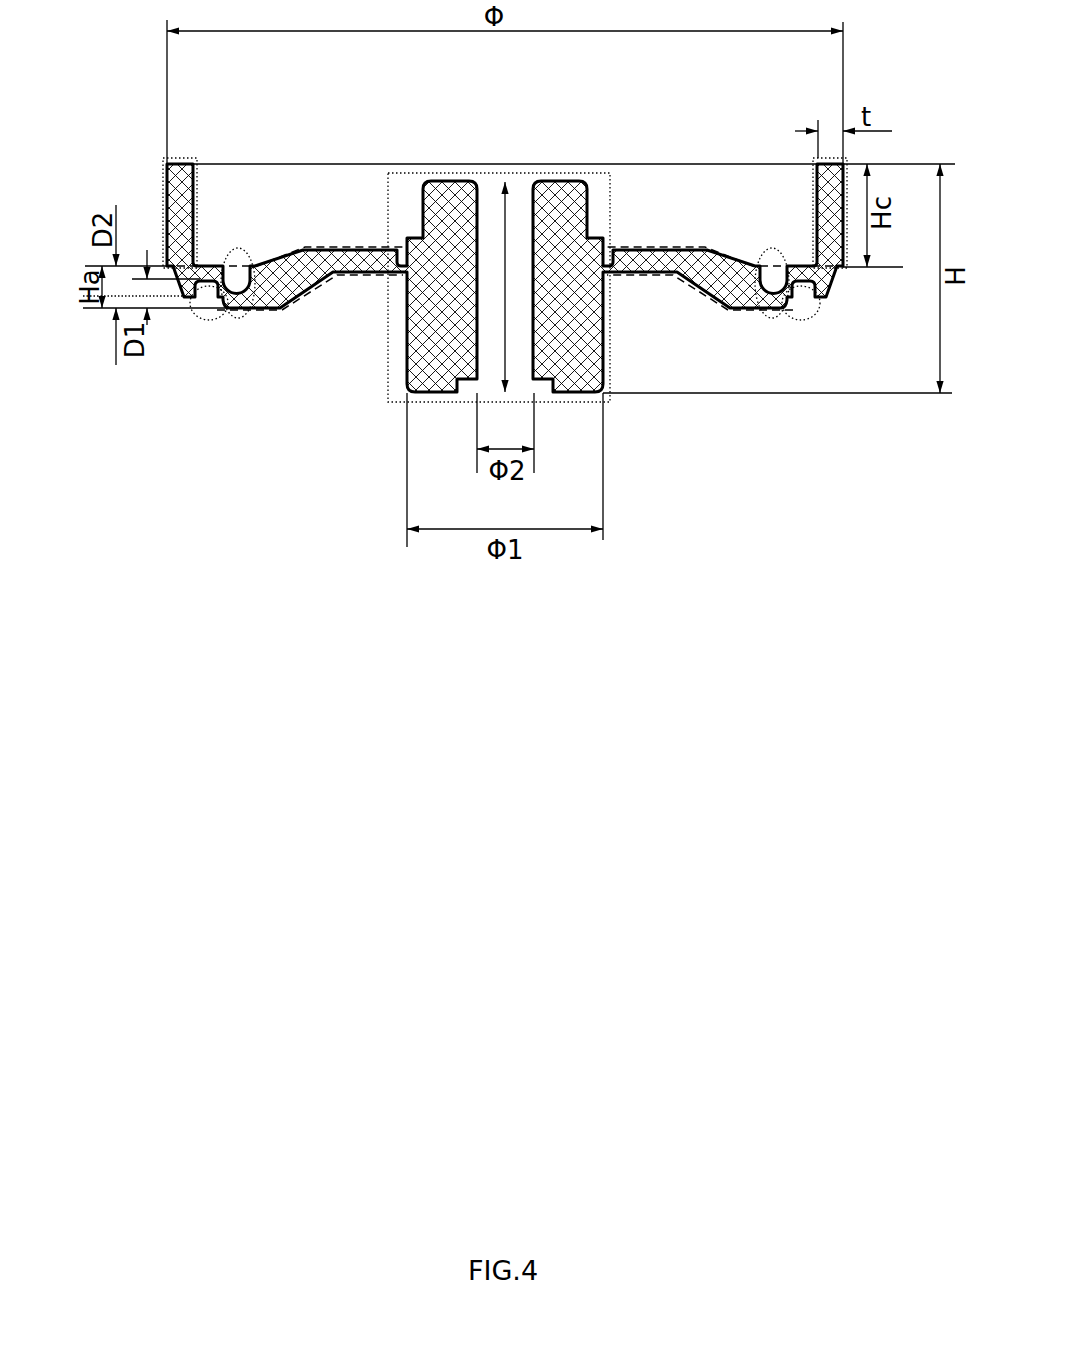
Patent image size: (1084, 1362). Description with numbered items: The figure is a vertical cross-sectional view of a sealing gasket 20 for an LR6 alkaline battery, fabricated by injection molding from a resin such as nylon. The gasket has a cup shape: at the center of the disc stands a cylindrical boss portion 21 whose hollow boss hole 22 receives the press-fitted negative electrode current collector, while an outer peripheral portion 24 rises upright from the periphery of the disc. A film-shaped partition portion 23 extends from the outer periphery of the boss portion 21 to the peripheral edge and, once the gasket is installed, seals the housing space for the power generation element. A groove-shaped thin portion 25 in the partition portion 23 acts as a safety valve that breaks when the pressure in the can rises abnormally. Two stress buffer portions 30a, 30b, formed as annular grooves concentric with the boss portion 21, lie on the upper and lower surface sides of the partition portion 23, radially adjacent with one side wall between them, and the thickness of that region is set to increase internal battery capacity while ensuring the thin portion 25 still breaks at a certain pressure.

The sealing gasket 20 is at (145, 116).
The boss portion 21 is at (608, 398).
The boss hole 22 is at (490, 198).
The partition portion 23 is at (275, 313).
The outer peripheral portion 24 is at (163, 182).
The thin portion 25 is at (399, 268).
The stress buffer portion 30a is at (209, 286).
The stress buffer portion 30b is at (238, 248).